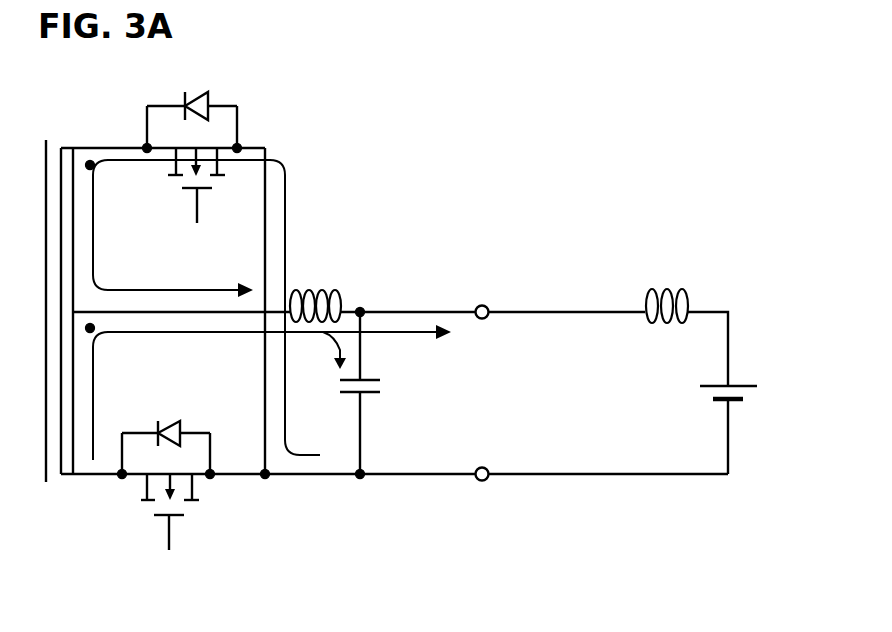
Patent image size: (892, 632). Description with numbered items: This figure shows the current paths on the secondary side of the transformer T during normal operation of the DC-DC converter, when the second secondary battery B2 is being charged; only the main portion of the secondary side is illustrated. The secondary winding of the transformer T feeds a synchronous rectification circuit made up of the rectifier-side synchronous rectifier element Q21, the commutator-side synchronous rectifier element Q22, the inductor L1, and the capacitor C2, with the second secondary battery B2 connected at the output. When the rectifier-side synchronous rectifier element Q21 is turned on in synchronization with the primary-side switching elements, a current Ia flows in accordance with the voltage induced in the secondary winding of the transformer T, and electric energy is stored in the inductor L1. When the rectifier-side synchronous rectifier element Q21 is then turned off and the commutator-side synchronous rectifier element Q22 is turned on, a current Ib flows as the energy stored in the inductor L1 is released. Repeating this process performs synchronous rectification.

The transformer T is at (63, 133).
The commutator-side synchronous rectifier element Q22 is at (186, 157).
The rectifier-side synchronous rectifier element Q21 is at (179, 485).
The inductor L1 is at (382, 285).
The capacitor C2 is at (381, 395).
The second secondary battery B2 is at (711, 381).
The current Ia is at (272, 392).
The current Ib is at (206, 307).